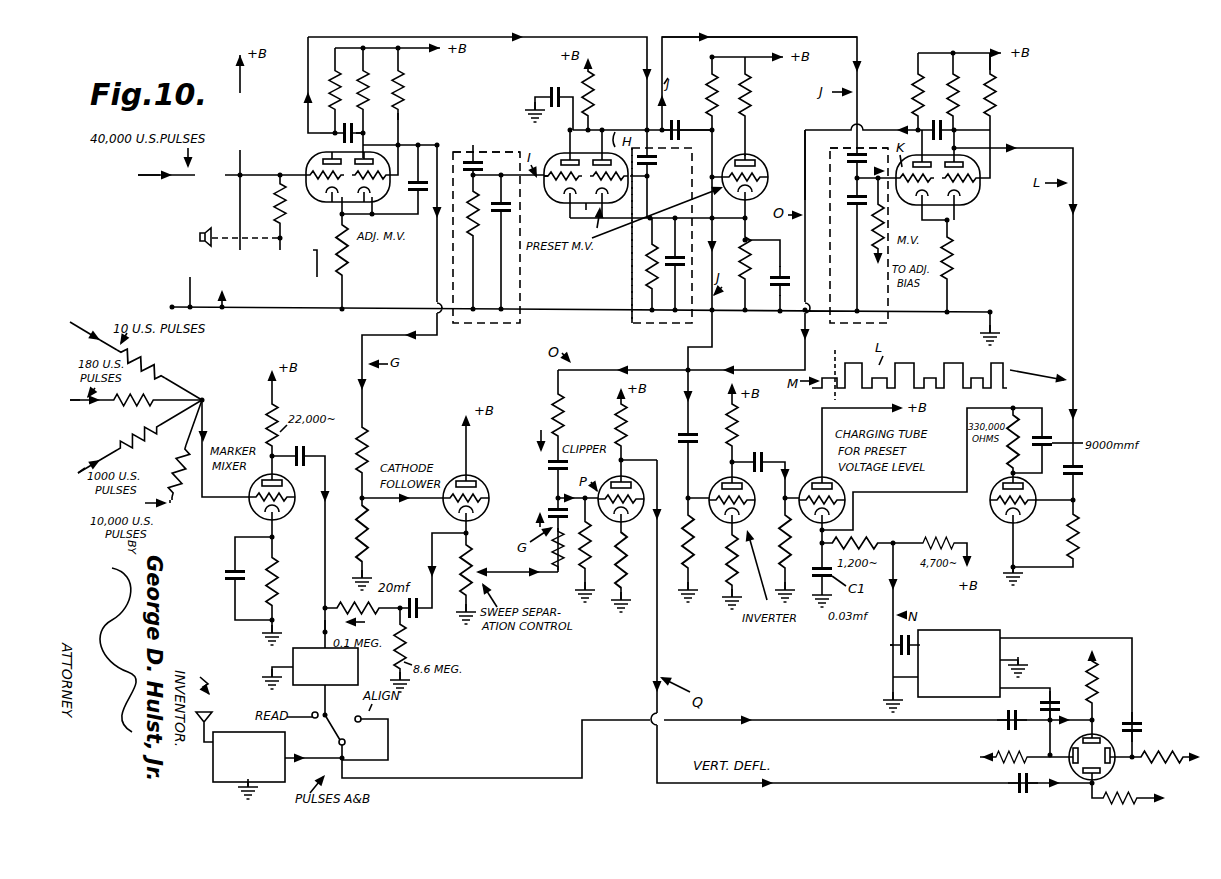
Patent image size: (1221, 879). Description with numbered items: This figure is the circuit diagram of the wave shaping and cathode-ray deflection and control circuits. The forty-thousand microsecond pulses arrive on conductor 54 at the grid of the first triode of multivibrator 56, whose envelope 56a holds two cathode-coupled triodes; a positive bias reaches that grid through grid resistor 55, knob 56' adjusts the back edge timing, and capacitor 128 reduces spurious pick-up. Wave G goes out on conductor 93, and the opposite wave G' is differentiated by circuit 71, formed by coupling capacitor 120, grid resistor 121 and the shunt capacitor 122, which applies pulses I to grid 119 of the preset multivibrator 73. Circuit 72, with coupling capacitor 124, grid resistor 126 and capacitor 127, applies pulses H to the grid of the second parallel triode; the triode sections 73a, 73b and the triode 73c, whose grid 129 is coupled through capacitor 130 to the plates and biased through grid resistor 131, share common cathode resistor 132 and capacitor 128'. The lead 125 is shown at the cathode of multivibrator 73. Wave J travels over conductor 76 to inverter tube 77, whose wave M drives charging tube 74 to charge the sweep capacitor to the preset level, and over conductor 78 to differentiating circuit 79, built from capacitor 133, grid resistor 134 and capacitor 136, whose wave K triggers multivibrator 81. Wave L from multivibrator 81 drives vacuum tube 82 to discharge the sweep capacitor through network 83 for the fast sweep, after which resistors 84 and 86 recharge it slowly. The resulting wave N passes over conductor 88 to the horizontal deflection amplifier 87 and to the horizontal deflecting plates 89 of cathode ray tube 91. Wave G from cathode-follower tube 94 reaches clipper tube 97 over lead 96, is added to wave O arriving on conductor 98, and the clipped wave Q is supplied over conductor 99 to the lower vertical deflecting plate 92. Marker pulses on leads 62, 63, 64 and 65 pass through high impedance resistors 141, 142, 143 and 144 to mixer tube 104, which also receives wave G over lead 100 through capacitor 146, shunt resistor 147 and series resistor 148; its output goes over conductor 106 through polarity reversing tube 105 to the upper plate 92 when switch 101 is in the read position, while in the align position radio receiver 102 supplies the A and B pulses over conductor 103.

The conductor 54 is at (153, 180).
The grid resistor 55 is at (273, 203).
The multivibrator 56 is at (337, 125).
The knob 56' is at (236, 224).
The vacuum tube envelope 56a is at (332, 202).
The capacitor 128 is at (405, 193).
The conductor 93 is at (433, 250).
The coupling capacitor 120 is at (463, 154).
The differentiating circuit 71 is at (492, 151).
The capacitor 122 is at (501, 191).
The grid resistor 121 is at (471, 243).
The grid 119 is at (547, 158).
The capacitor 128' is at (548, 93).
The triode section 73a is at (535, 197).
The preset multivibrator 73 is at (554, 201).
The triode section 73b is at (607, 134).
The cathode lead 125 is at (607, 220).
The coupling capacitor 124 is at (650, 165).
The capacitor 127 is at (658, 210).
The differentiating circuit 72 is at (631, 265).
The grid resistor 126 is at (648, 288).
The conductor 78 is at (866, 49).
The capacitor 130 is at (688, 112).
The grid resistor 131 is at (714, 112).
The grid 129 is at (731, 161).
The triode 73c is at (764, 163).
The common cathode resistor 132 is at (748, 256).
The conductor 98 is at (805, 130).
The differentiating circuit 79 is at (880, 146).
The capacitor 133 is at (845, 157).
The capacitor 136 is at (848, 199).
The grid resistor 134 is at (884, 230).
The multivibrator 81 is at (946, 168).
The output lead 62 is at (87, 324).
The high impedance resistor 141 is at (149, 360).
The high impedance resistor 142 is at (124, 424).
The conductor 63 is at (72, 413).
The high impedance resistor 143 is at (140, 442).
The conductor 64 is at (74, 492).
The high impedance resistor 144 is at (173, 455).
The conductor 65 is at (169, 503).
The mixer tube 104 is at (250, 505).
The series resistor 148 is at (327, 603).
The capacitor 146 is at (420, 618).
The shunt resistor 147 is at (410, 643).
The conductor 106 is at (323, 631).
The polarity reversing tube 105 is at (292, 660).
The switch 101 is at (341, 729).
The conductor 103 is at (390, 743).
The radio receiver 102 is at (213, 783).
The cathode-follower tube 94 is at (480, 479).
The lead 100 is at (431, 552).
The lead 96 is at (507, 568).
The clipper tube 97 is at (649, 460).
The conductor 99 is at (657, 649).
The conductor 76 is at (688, 353).
The inverter tube 77 is at (713, 481).
The charging tube 74 is at (814, 480).
The resistor 86 is at (857, 537).
The resistor 84 is at (944, 536).
The conductor 88 is at (898, 606).
The horizontal deflection amplifier 87 is at (973, 622).
The network 83 is at (1029, 420).
The vacuum tube 82 is at (997, 485).
The cathode ray tube 91 is at (1105, 727).
The vertical deflecting plate 92 is at (1070, 770).
The horizontal deflecting plates 89 is at (1113, 768).